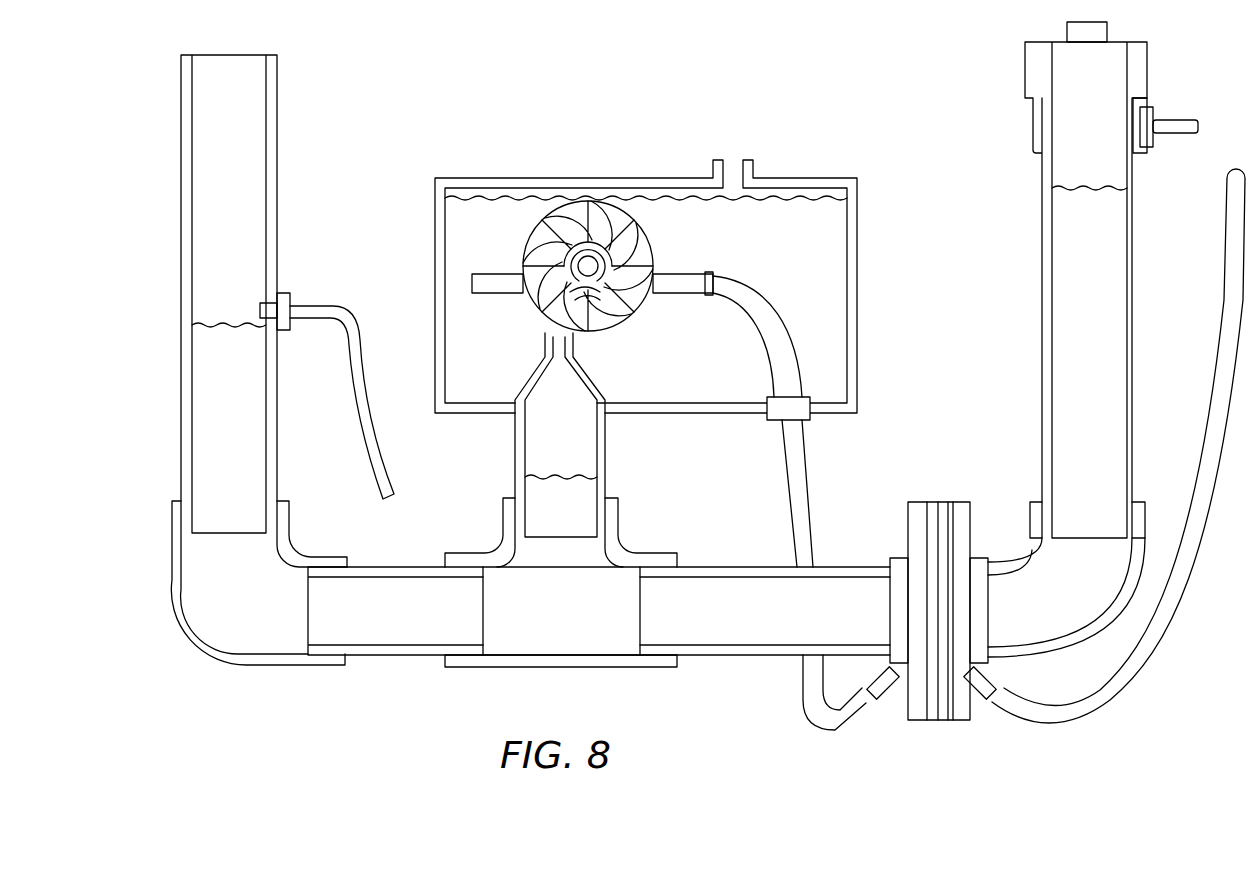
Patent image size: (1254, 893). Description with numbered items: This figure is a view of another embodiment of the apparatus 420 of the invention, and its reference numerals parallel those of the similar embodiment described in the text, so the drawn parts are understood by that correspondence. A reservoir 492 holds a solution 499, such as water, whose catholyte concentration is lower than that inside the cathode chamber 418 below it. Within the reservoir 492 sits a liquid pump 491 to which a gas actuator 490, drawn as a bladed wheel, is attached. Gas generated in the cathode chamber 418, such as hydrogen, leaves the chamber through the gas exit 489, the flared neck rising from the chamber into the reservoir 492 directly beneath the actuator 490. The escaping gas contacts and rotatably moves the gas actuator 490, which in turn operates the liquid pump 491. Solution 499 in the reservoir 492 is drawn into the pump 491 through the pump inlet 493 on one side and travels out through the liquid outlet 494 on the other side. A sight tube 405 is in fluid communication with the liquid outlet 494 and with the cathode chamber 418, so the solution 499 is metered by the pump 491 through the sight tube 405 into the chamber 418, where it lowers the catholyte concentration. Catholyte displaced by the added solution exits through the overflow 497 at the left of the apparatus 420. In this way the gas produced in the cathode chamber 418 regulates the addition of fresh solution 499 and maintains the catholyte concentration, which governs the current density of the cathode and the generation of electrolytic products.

The sight tube 405 is at (808, 498).
The cathode chamber 418 is at (421, 568).
The apparatus 420 is at (369, 682).
The gas exit 489 is at (556, 342).
The gas actuator 490 is at (543, 222).
The liquid pump 491 is at (607, 247).
The reservoir 492 is at (807, 246).
The pump inlet 493 is at (468, 283).
The liquid outlet 494 is at (724, 272).
The overflow 497 is at (354, 324).
The solution 499 is at (733, 387).